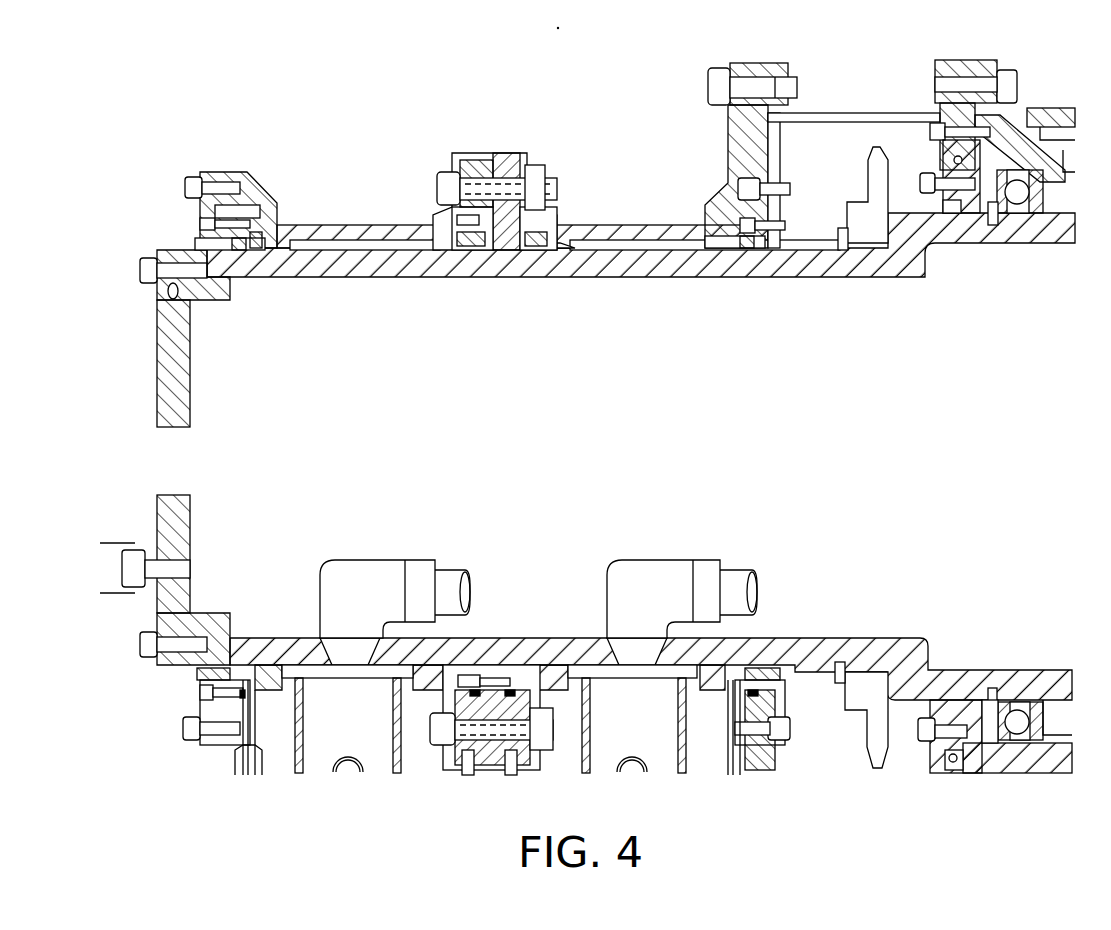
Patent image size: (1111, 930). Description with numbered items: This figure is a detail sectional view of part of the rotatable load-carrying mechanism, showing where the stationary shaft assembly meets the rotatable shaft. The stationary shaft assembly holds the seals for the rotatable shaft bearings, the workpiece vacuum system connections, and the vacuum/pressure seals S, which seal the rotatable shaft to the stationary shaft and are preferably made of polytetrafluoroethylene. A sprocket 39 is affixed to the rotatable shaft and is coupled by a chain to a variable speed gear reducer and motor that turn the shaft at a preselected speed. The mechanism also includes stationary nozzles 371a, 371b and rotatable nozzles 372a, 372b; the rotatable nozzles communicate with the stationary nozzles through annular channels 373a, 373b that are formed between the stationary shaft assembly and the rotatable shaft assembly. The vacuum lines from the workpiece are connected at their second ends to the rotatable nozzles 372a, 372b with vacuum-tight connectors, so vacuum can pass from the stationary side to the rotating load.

The sprocket 39 is at (868, 187).
The stationary nozzle 371a is at (305, 750).
The stationary nozzle 371b is at (592, 750).
The rotatable nozzle 372a is at (340, 580).
The rotatable nozzle 372b is at (630, 590).
The annular channel 373a is at (347, 653).
The annular channel 373b is at (640, 655).
The vacuum/pressure seals S is at (235, 700).